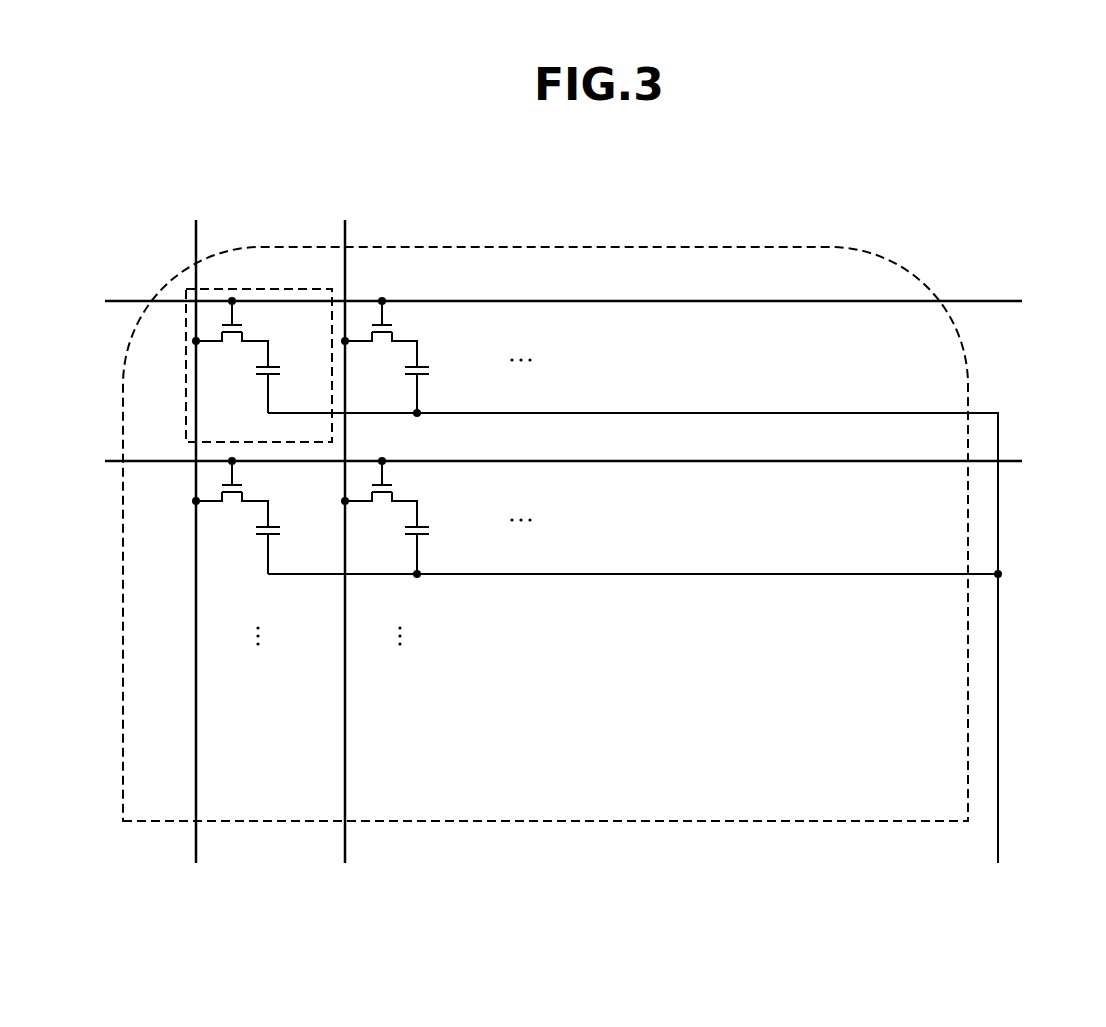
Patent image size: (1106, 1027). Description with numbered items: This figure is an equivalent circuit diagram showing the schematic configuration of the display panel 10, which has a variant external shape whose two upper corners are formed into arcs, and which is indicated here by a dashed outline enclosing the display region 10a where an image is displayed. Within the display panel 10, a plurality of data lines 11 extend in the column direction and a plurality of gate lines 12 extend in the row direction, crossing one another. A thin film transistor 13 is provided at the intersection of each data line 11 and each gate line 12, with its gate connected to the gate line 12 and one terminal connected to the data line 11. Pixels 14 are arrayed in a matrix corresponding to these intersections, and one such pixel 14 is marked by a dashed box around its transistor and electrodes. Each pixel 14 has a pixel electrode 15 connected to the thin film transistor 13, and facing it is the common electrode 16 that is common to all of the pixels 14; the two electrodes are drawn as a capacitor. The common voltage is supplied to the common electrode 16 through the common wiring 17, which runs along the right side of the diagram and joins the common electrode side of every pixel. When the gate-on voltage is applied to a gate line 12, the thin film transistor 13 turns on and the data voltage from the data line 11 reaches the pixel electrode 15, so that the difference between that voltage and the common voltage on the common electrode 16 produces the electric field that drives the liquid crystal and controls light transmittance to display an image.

The display panel 10 is at (1024, 222).
The display region 10a is at (818, 247).
The data line 11 is at (196, 729).
The gate line 12 is at (622, 301).
The thin film transistor 13 is at (233, 346).
The pixel 14 is at (268, 290).
The pixel electrode 15 is at (282, 364).
The common electrode 16 is at (282, 378).
The common wiring 17 is at (998, 729).